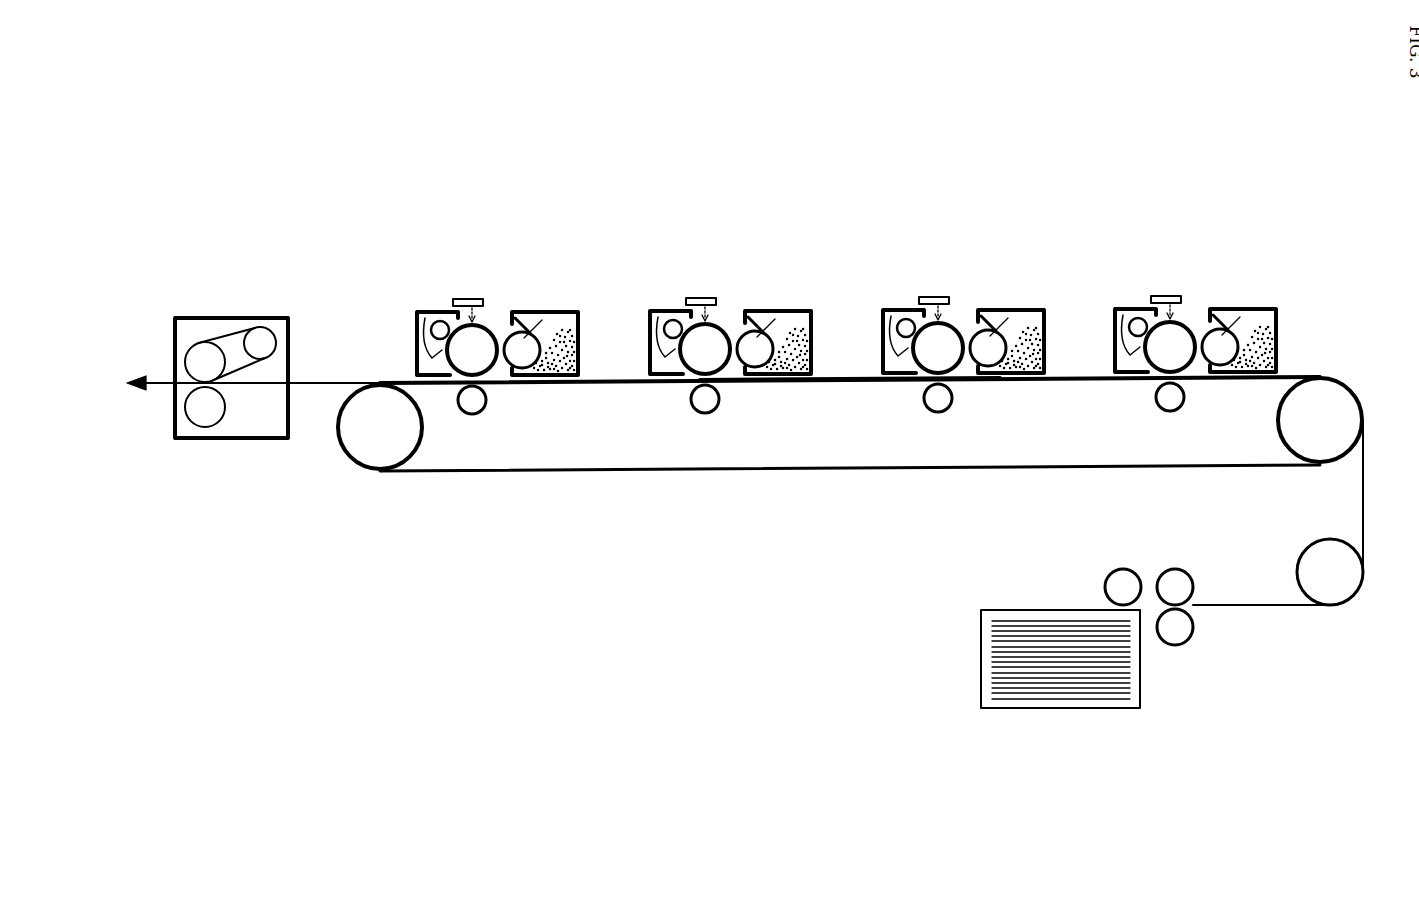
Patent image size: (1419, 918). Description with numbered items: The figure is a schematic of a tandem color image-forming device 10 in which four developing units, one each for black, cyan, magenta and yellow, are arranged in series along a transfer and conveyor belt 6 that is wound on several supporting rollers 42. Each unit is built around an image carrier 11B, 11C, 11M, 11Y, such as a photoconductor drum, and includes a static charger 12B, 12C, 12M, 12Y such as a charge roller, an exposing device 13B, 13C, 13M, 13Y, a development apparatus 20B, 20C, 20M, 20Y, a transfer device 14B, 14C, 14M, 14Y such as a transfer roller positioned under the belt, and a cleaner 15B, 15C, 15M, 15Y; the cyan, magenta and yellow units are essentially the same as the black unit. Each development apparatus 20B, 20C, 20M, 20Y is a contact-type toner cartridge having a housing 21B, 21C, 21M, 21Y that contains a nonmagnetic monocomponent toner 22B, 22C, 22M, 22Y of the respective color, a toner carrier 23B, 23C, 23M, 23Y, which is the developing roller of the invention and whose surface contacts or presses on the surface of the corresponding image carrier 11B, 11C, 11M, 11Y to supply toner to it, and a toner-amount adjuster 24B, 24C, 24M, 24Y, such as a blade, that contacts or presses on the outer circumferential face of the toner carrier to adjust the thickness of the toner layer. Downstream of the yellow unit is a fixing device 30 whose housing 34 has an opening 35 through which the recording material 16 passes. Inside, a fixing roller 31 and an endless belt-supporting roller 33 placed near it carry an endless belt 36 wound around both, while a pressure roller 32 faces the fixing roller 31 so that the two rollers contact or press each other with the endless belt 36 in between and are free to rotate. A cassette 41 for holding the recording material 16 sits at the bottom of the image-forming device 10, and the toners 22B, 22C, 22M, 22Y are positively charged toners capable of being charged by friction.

The image-forming device 10 is at (867, 150).
The transfer and conveyor belt 6 is at (843, 470).
The recording material 16 is at (1297, 376).
The supporting rollers 42 is at (372, 436).
The cassette 41 is at (1025, 613).
The opening 35 is at (296, 380).
The fixing device 30 is at (235, 345).
The fixing roller 31 is at (198, 360).
The pressure roller 32 is at (205, 405).
The endless belt-supporting roller 33 is at (268, 343).
The fixing device housing 34 is at (290, 318).
The endless belt 36 is at (222, 335).
The image carrier 11Y is at (482, 340).
The static charger 12Y is at (439, 321).
The exposing device 13Y is at (464, 299).
The transfer device 14Y is at (472, 405).
The cleaner 15Y is at (424, 320).
The development apparatus 20Y is at (521, 311).
The housing 21Y is at (580, 316).
The toner 22Y is at (565, 342).
The toner carrier 23Y is at (542, 320).
The toner-amount adjuster 24Y is at (528, 343).
The image carrier 11M is at (715, 340).
The static charger 12M is at (672, 321).
The exposing device 13M is at (697, 299).
The transfer device 14M is at (705, 405).
The cleaner 15M is at (657, 320).
The development apparatus 20M is at (753, 319).
The housing 21M is at (813, 316).
The toner 22M is at (798, 342).
The toner carrier 23M is at (775, 320).
The toner-amount adjuster 24M is at (761, 343).
The image carrier 11C is at (948, 340).
The static charger 12C is at (905, 321).
The exposing device 13C is at (930, 299).
The transfer device 14C is at (938, 405).
The cleaner 15C is at (890, 320).
The development apparatus 20C is at (987, 313).
The housing 21C is at (1046, 316).
The toner 22C is at (1031, 342).
The toner carrier 23C is at (1008, 320).
The toner-amount adjuster 24C is at (994, 343).
The image carrier 11B is at (1180, 340).
The static charger 12B is at (1137, 321).
The exposing device 13B is at (1162, 299).
The transfer device 14B is at (1170, 405).
The cleaner 15B is at (1122, 320).
The development apparatus 20B is at (1217, 312).
The housing 21B is at (1278, 316).
The toner 22B is at (1263, 342).
The toner carrier 23B is at (1240, 320).
The toner-amount adjuster 24B is at (1226, 343).